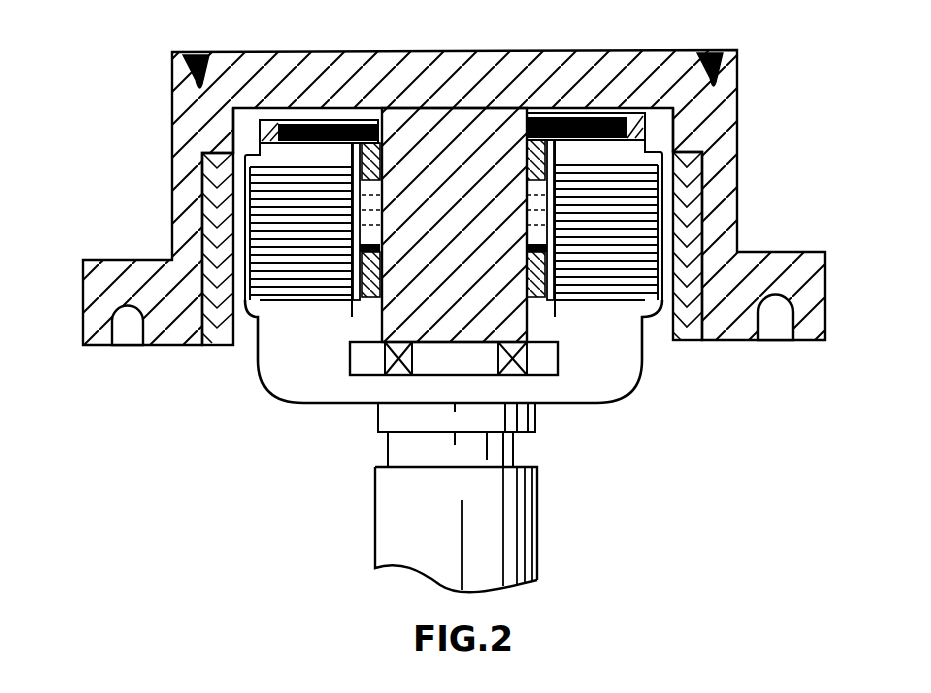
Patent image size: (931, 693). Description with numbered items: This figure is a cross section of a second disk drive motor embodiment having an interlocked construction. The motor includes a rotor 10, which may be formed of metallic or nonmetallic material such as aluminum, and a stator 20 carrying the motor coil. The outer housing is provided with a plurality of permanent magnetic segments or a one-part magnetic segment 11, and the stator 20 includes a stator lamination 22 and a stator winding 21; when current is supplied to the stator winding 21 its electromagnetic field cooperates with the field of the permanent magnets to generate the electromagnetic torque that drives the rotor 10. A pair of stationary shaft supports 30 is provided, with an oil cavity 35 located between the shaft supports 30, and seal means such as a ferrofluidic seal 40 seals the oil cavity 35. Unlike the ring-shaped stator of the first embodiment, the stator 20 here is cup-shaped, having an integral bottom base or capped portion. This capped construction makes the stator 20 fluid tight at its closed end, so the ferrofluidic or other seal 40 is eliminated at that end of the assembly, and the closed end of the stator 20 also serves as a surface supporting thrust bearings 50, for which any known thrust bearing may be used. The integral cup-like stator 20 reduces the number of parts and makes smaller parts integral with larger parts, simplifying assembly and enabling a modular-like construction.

The rotor 10 is at (463, 198).
The magnetic segment 11 is at (218, 333).
The stator 20 is at (320, 371).
The stator winding 21 is at (700, 222).
The stator lamination 22 is at (628, 157).
The stationary shaft support 30 is at (383, 157).
The oil cavity 35 is at (538, 220).
The ferrofluidic seal 40 is at (270, 128).
The thrust bearing 50 is at (530, 357).